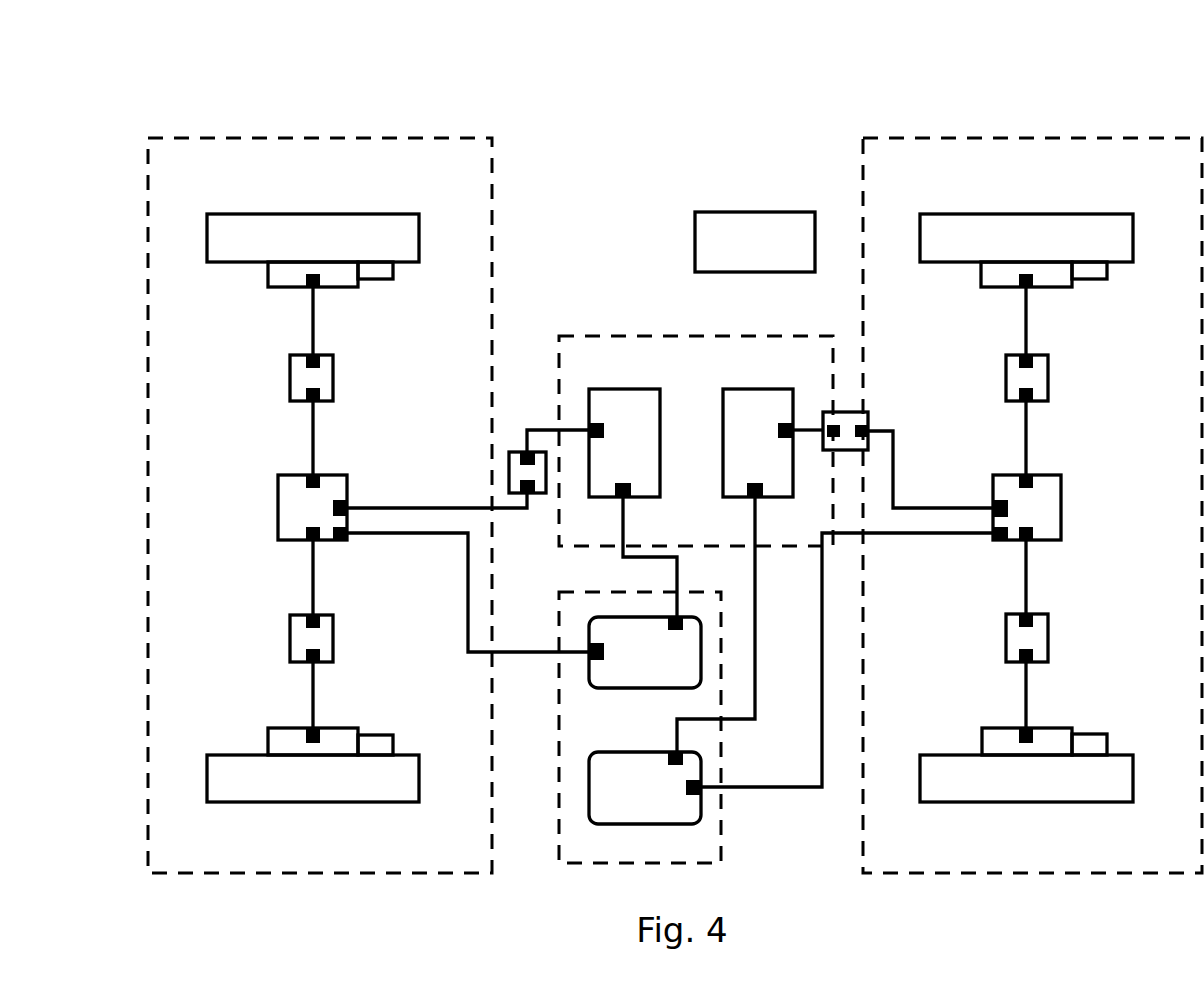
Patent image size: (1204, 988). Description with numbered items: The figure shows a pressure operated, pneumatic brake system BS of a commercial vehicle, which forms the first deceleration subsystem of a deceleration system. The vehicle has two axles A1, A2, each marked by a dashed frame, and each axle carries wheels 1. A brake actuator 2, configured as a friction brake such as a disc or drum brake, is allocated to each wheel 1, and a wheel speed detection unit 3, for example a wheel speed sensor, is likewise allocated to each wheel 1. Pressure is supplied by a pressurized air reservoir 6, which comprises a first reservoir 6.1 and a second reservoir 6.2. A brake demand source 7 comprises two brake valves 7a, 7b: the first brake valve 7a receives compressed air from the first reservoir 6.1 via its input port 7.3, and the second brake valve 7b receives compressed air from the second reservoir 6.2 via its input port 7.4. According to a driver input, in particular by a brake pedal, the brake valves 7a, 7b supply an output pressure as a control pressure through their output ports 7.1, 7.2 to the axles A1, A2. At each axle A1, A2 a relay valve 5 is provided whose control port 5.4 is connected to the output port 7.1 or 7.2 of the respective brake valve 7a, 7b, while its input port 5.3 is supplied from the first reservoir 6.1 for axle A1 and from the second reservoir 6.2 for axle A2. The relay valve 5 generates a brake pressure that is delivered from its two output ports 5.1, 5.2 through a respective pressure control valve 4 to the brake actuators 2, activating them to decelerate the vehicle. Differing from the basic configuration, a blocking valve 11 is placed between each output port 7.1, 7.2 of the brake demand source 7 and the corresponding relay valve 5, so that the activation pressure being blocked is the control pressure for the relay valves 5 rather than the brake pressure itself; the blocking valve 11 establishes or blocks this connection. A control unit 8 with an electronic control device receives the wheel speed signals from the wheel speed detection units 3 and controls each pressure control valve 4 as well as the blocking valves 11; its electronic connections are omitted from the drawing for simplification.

The wheel 1 is at (318, 213).
The brake actuator 2 is at (275, 288).
The wheel speed detection unit 3 is at (393, 280).
The pressure control valve 4 is at (290, 383).
The relay valve 5 is at (278, 525).
The output port 5.1 is at (306, 476).
The output port 5.2 is at (306, 541).
The input port 5.3 is at (347, 541).
The control port 5.4 is at (347, 504).
The pressurized air reservoir 6 is at (640, 727).
The first reservoir 6.1 is at (608, 690).
The second reservoir 6.2 is at (650, 825).
The brake demand source 7 is at (696, 441).
The first brake valve 7a is at (610, 389).
The second brake valve 7b is at (745, 389).
The output port 7.1 is at (589, 427).
The output port 7.2 is at (793, 426).
The input port 7.3 is at (628, 497).
The input port 7.4 is at (757, 497).
The control unit 8 is at (728, 212).
The blocking valve 11 is at (510, 456).
The first axle A1 is at (173, 163).
The second axle A2 is at (898, 162).
The brake system BS is at (463, 112).